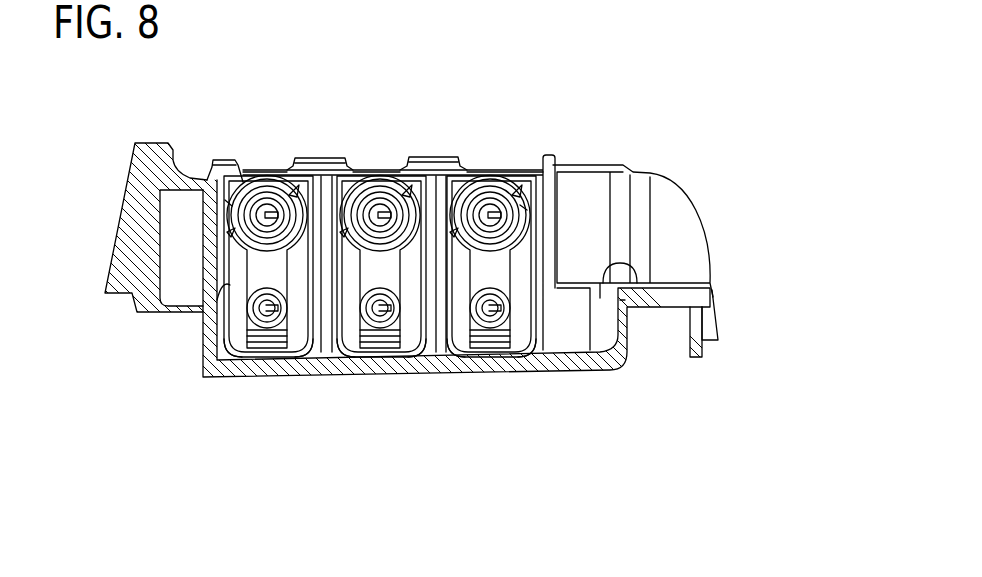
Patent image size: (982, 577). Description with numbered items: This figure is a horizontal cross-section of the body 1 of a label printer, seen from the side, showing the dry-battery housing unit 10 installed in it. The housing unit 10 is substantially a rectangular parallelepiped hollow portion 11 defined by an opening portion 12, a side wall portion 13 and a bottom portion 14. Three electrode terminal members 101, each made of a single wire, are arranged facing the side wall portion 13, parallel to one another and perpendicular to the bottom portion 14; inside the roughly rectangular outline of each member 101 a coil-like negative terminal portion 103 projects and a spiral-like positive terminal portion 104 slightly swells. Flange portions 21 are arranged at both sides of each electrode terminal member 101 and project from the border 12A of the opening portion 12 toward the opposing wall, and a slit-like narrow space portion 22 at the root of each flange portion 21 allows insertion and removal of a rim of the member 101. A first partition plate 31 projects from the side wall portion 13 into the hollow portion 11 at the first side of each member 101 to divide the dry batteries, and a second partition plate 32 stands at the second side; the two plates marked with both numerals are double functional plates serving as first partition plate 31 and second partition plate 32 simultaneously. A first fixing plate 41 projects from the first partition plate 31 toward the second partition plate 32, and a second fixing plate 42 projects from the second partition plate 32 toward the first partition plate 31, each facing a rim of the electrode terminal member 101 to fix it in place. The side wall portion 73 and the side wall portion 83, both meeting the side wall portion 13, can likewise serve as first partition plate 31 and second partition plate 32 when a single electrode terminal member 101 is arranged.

The body 1 is at (116, 195).
The dry-battery housing unit 10 is at (569, 331).
The hollow portion 11 is at (586, 411).
The opening portion 12 is at (571, 155).
The border 12A is at (283, 172).
The side wall portion 13 is at (240, 250).
The bottom portion 14 is at (605, 345).
The flange portion 21 is at (224, 158).
The narrow space portion 22 is at (267, 208).
The first partition plate 31 is at (324, 365).
The second partition plate 32 is at (438, 365).
The first fixing plate 41 is at (296, 368).
The second fixing plate 42 is at (232, 372).
The side wall portion 73 is at (640, 268).
The side wall portion 83 is at (225, 292).
The electrode terminal member 101 is at (225, 203).
The negative terminal portion 103 is at (259, 200).
The positive terminal portion 104 is at (277, 335).